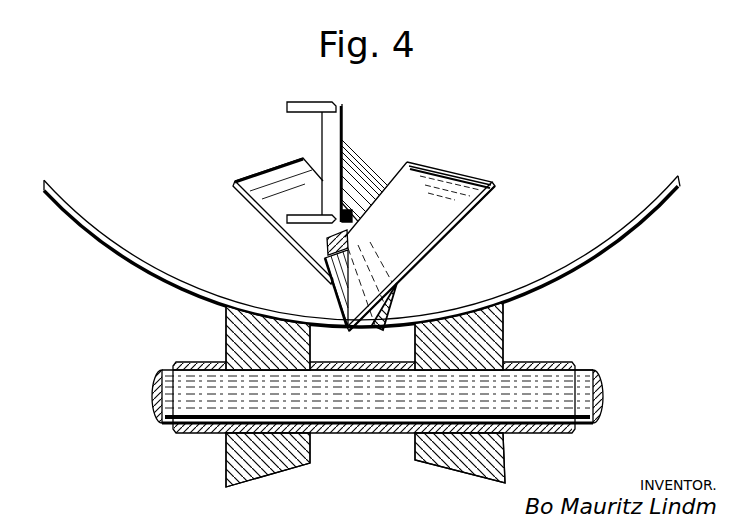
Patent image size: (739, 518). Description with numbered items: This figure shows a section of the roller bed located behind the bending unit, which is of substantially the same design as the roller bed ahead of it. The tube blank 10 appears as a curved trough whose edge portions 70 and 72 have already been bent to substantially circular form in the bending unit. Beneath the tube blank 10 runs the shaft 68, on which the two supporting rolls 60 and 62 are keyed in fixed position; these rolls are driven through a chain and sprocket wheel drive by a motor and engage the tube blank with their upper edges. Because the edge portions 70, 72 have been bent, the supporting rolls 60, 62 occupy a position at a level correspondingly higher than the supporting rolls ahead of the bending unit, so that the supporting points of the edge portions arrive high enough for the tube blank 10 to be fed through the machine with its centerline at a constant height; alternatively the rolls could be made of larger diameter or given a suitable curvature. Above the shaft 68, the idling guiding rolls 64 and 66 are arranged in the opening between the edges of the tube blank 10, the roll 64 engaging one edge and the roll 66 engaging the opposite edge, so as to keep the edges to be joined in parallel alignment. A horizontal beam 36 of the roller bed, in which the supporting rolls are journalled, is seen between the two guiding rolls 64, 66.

The tube blank 10 is at (617, 238).
The horizontal beam 36 is at (335, 123).
The supporting roll 60 is at (297, 467).
The supporting roll 62 is at (443, 460).
The guiding roll 64 is at (258, 178).
The guiding roll 66 is at (452, 174).
The shaft 68 is at (597, 368).
The edge portion 70 is at (287, 315).
The edge portion 72 is at (428, 318).